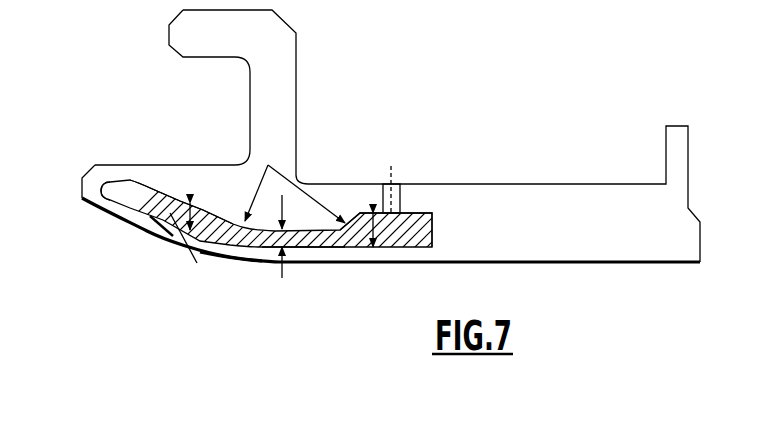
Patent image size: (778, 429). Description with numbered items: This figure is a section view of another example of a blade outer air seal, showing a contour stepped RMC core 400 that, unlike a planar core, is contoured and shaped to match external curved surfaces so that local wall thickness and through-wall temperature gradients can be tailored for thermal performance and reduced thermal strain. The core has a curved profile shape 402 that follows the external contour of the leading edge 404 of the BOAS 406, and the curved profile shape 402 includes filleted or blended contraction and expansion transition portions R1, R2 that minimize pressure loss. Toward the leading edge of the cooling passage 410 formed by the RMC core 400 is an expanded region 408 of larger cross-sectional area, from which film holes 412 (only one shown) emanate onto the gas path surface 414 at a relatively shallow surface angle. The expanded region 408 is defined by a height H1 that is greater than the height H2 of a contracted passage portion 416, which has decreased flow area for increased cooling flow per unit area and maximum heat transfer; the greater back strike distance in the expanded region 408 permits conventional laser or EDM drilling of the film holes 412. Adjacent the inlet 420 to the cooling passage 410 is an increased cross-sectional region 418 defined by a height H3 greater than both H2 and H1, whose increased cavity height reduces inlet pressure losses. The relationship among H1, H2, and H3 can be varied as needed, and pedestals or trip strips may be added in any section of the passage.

The contour stepped RMC core 400 is at (163, 208).
The curved profile shape 402 is at (130, 225).
The leading edge 404 is at (88, 212).
The BOAS 406 is at (527, 203).
The expanded region 408 is at (127, 195).
The cooling passage 410 is at (218, 213).
The film holes 412 is at (175, 247).
The gas path surface 414 is at (243, 265).
The contracted passage portion 416 is at (327, 247).
The increased cross-sectional region 418 is at (419, 213).
The inlet 420 is at (393, 195).
The transition portion R1 is at (246, 193).
The transition portion R2 is at (306, 197).
The height of expanded region H1 is at (200, 247).
The height of contracted passage portion H2 is at (292, 258).
The height of increased cross-sectional region H3 is at (385, 248).